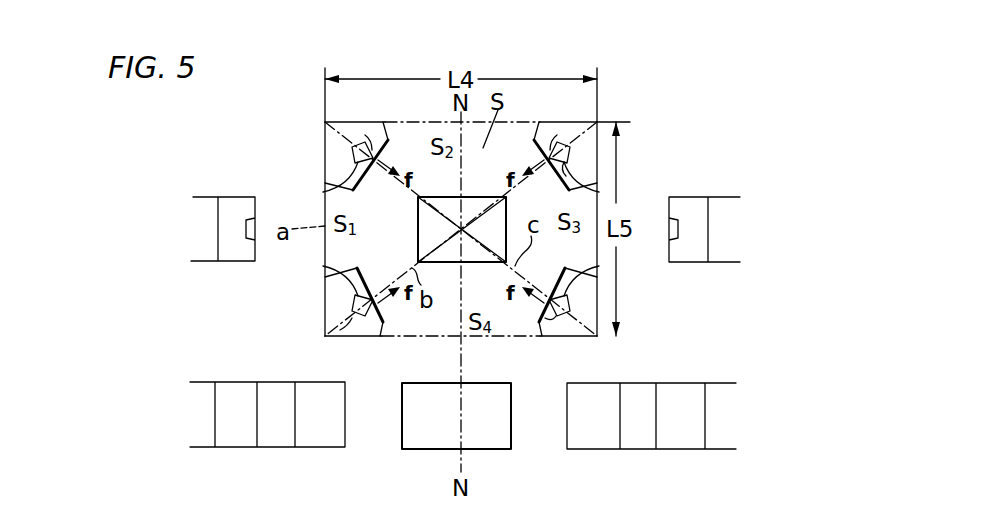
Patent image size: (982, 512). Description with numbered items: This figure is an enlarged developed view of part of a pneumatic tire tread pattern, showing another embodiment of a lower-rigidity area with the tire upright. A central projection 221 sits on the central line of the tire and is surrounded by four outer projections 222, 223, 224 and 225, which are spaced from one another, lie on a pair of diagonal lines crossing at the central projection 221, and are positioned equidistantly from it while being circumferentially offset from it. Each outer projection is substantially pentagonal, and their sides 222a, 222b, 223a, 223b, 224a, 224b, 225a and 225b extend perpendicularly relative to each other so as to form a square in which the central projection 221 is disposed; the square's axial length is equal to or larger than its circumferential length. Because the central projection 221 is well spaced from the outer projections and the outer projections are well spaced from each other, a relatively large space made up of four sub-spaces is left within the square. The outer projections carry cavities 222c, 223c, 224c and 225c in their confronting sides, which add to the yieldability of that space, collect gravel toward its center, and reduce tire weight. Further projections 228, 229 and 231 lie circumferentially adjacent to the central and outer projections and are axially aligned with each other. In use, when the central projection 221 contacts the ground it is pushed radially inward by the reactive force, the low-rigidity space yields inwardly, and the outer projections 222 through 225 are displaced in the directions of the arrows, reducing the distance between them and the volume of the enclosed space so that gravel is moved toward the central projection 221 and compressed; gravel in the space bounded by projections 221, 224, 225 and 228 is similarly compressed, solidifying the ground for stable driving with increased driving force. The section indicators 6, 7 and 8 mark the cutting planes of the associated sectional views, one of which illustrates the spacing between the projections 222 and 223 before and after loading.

The central projection 221 is at (478, 250).
The outer projection 222 is at (356, 130).
The side of outer projection 222a is at (366, 128).
The side of outer projection 222b is at (325, 154).
The cavity 222c is at (326, 193).
The outer projection 223 is at (592, 146).
The side of outer projection 223a is at (600, 165).
The side of outer projection 223b is at (574, 122).
The cavity 223c is at (562, 165).
The outer projection 224 is at (372, 330).
The side of outer projection 224a is at (327, 302).
The side of outer projection 224b is at (345, 337).
The cavity 224c is at (373, 290).
The outer projection 225 is at (585, 317).
The side of outer projection 225a is at (567, 338).
The side of outer projection 225b is at (598, 321).
The cavity 225c is at (537, 327).
The projection 228 is at (440, 445).
The projection 229 is at (330, 432).
The projection 231 is at (601, 447).
The section line 6- 6 is at (218, 228).
The section line 7- 7 is at (212, 418).
The section line 8- 8 is at (325, 334).